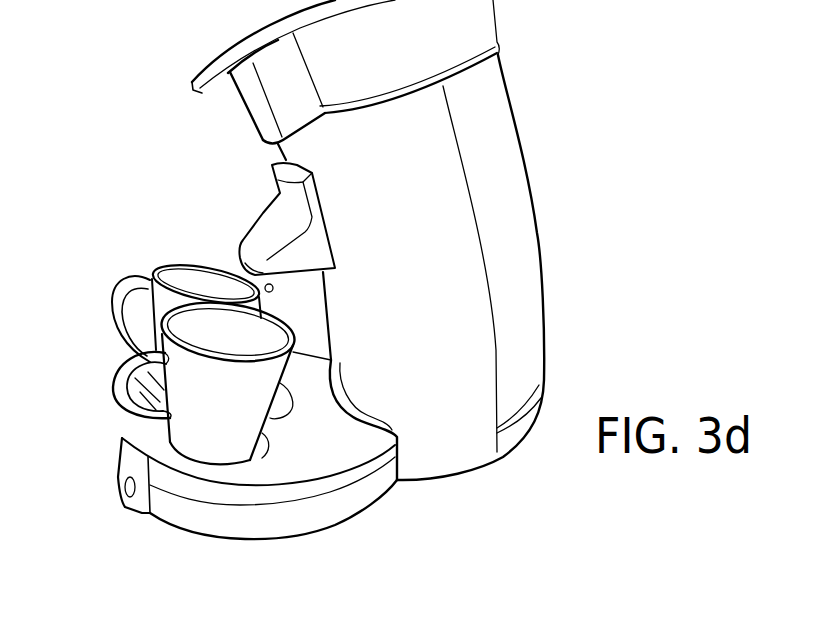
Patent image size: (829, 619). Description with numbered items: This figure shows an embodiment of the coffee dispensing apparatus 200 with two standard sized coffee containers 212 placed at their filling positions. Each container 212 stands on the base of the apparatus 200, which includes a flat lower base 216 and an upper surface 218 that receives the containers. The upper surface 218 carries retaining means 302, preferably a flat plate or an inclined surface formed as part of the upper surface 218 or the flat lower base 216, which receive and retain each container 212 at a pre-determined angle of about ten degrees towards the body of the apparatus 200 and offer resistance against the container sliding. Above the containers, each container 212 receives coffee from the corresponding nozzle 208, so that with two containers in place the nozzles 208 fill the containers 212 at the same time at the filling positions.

The coffee dispensing apparatus 200 is at (546, 179).
The nozzle 208 is at (273, 292).
The standard sized coffee container 212 is at (155, 316).
The flat lower base 216 is at (278, 539).
The upper surface 218 is at (334, 432).
The retaining means 302 is at (285, 405).